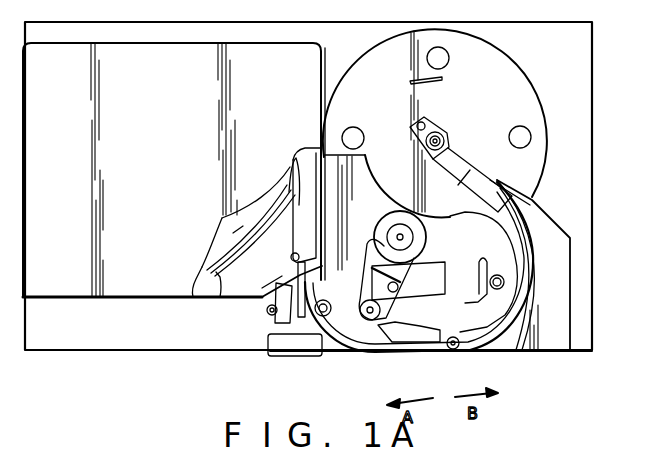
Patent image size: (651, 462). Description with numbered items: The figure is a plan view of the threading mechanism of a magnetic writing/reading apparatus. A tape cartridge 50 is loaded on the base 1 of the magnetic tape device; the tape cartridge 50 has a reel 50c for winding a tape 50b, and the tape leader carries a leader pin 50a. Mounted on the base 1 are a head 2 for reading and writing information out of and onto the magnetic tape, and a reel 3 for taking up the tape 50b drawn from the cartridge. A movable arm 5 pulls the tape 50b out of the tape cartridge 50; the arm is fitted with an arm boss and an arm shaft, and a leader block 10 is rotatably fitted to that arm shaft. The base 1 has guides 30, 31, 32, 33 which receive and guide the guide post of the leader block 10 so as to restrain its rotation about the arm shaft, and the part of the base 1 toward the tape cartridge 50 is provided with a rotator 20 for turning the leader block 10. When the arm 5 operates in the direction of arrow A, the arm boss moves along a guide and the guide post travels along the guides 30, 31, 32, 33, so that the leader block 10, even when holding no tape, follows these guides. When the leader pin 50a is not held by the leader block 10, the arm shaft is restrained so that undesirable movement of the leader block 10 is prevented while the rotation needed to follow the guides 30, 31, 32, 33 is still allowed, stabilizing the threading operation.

The base 1 is at (85, 344).
The head 2 is at (400, 330).
The reel 3 is at (538, 152).
The movable arm 5 is at (470, 340).
The leader block 10 is at (430, 345).
The rotator 20 is at (262, 320).
The guide 30 is at (342, 325).
The guide 31 is at (290, 345).
The guide 32 is at (372, 357).
The guide 33 is at (552, 345).
The tape cartridge 50 is at (142, 297).
The leader pin 50a is at (292, 260).
The tape 50b is at (288, 195).
The reel 50c is at (220, 293).